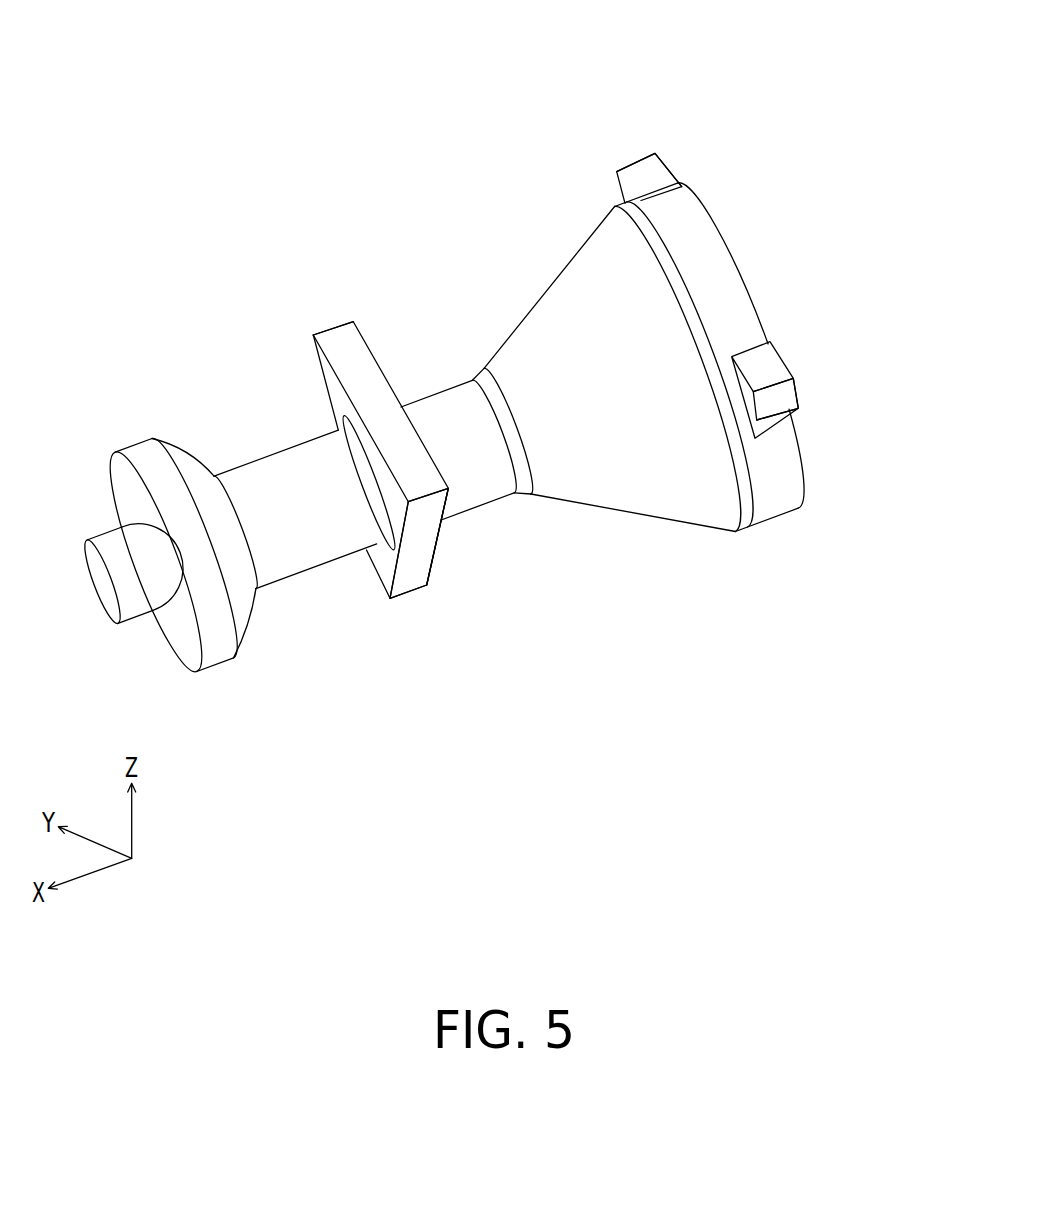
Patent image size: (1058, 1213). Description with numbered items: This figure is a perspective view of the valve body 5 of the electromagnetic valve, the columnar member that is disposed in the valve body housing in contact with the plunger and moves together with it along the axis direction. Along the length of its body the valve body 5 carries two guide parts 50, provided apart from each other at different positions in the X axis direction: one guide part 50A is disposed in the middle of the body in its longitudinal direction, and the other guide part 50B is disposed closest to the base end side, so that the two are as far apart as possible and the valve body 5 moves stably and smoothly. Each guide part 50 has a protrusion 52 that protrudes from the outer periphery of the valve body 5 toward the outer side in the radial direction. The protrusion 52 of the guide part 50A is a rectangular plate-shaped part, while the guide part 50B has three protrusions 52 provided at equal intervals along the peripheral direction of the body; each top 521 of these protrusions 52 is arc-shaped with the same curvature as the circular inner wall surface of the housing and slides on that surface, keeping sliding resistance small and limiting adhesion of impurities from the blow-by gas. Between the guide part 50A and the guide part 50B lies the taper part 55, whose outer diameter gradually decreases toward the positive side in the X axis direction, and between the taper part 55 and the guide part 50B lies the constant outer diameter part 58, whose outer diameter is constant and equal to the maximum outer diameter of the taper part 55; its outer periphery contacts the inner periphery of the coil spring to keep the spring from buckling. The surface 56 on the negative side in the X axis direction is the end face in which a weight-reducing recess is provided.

The valve body 5 is at (352, 253).
The guide part 50 is at (629, 441).
The guide part 50A is at (411, 601).
The guide part 50B is at (807, 420).
The protrusion 52 is at (646, 172).
The top 521 is at (619, 163).
The taper part 55 is at (553, 305).
The surface 56 is at (753, 287).
The constant outer diameter part 58 is at (736, 417).